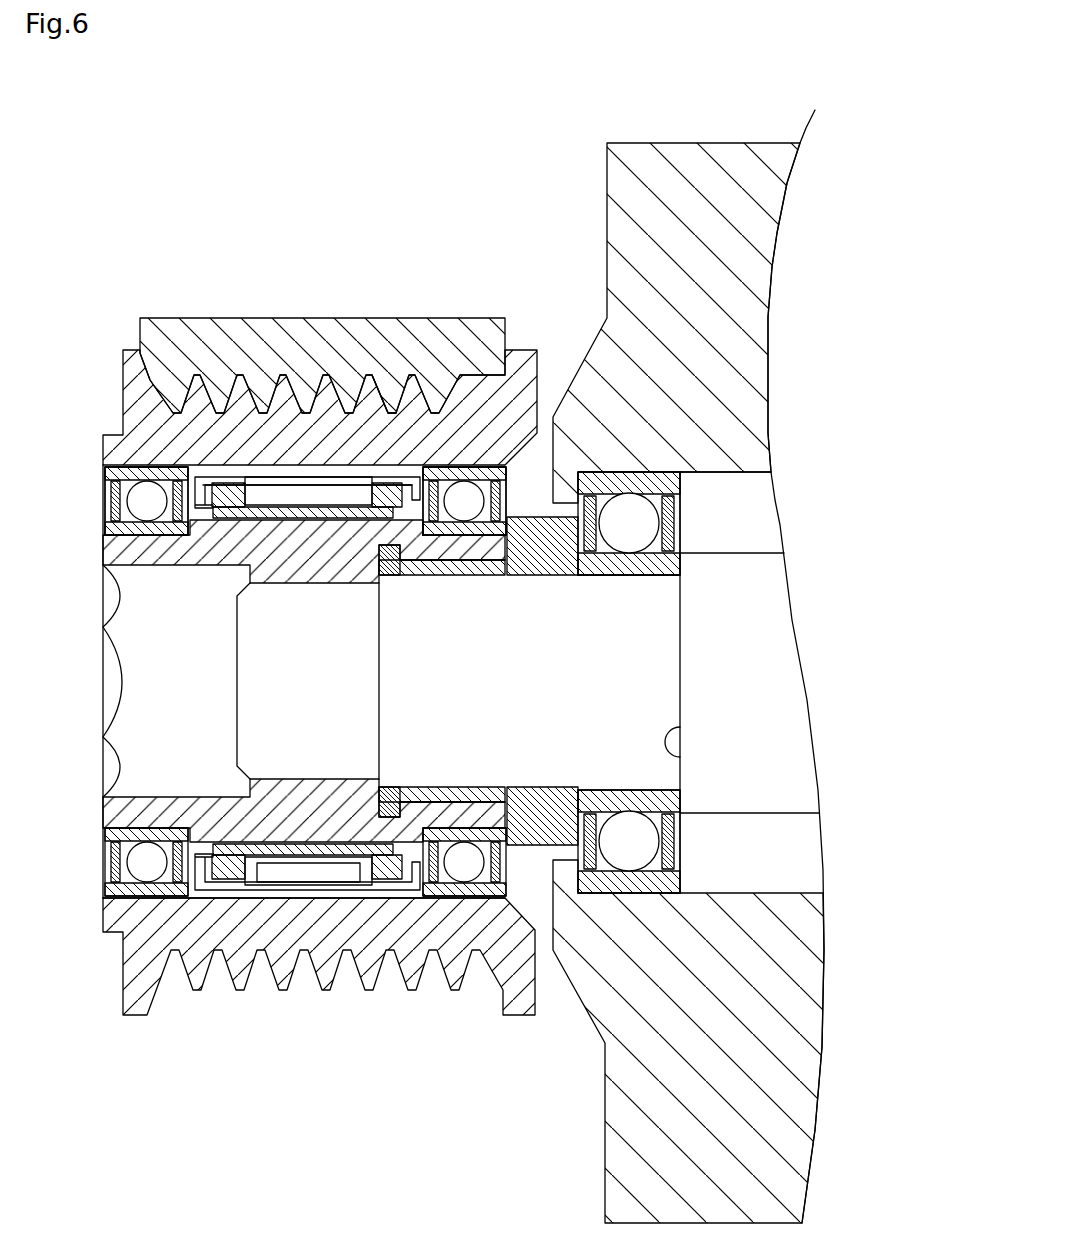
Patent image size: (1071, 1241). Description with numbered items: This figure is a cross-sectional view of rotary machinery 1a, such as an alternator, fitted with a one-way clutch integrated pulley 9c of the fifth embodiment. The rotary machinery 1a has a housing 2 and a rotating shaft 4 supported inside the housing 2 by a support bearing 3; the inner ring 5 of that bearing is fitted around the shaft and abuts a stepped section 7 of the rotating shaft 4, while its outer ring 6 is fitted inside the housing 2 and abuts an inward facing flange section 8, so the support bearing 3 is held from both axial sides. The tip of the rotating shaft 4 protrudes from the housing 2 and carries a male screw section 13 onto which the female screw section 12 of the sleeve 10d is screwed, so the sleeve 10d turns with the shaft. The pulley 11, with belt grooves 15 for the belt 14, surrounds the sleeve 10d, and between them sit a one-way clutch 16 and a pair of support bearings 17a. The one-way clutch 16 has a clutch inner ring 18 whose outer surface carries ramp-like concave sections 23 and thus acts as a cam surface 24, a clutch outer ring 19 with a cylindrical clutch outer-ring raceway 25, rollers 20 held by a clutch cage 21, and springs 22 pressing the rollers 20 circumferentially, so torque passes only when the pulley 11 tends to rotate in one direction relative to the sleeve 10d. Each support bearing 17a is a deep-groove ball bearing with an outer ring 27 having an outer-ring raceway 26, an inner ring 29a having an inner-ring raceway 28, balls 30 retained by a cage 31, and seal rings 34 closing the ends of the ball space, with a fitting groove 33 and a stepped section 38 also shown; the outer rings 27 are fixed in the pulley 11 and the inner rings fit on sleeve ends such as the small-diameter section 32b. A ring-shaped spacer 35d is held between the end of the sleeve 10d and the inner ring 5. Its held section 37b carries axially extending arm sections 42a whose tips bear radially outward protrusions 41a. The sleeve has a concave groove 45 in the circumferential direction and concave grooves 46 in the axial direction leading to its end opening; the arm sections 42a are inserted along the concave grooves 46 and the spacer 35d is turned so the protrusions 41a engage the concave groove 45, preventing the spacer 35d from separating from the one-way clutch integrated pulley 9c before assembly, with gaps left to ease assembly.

The rotary machinery 1a is at (600, 176).
The housing 2 is at (633, 226).
The support bearing 3 is at (640, 523).
The rotating shaft 4 is at (720, 621).
The inner ring 5 is at (650, 567).
The outer ring 6 is at (628, 484).
The stepped section 7 is at (690, 750).
The inward facing flange section 8 is at (567, 880).
The one-way clutch integrated pulley 9c is at (340, 237).
The sleeve 10d is at (351, 590).
The pulley 11 is at (327, 485).
The female screw section 12 is at (240, 630).
The male screw section 13 is at (367, 960).
The belt 14 is at (222, 333).
The belt groove 15 is at (388, 400).
The one-way clutch 16 is at (280, 488).
The support bearing 17a is at (153, 490).
The clutch inner ring 18 is at (308, 878).
The clutch outer ring 19 is at (255, 900).
The roller 20 is at (305, 487).
The clutch cage 21 is at (223, 507).
The spring 22 is at (308, 906).
The concave section 23 is at (318, 497).
The cam surface 24 is at (323, 860).
The clutch outer-ring raceway 25 is at (352, 512).
The outer-ring raceway 26 is at (135, 490).
The outer ring 27 is at (103, 470).
The inner-ring raceway 28 is at (103, 565).
The inner ring 29a is at (103, 532).
The ball 30 is at (494, 478).
The cage 31 is at (103, 838).
The small-diameter section 32b is at (150, 858).
The fitting groove 33 is at (103, 490).
The seal ring 34 is at (433, 480).
The spacer 35d is at (540, 550).
The held section 37b is at (562, 788).
The stepped section 38 is at (495, 552).
The protrusion 41a is at (404, 560).
The arm section 42a is at (450, 566).
The concave groove in the circumferential direction 45 is at (388, 552).
The concave groove in the axial direction 46 is at (415, 812).